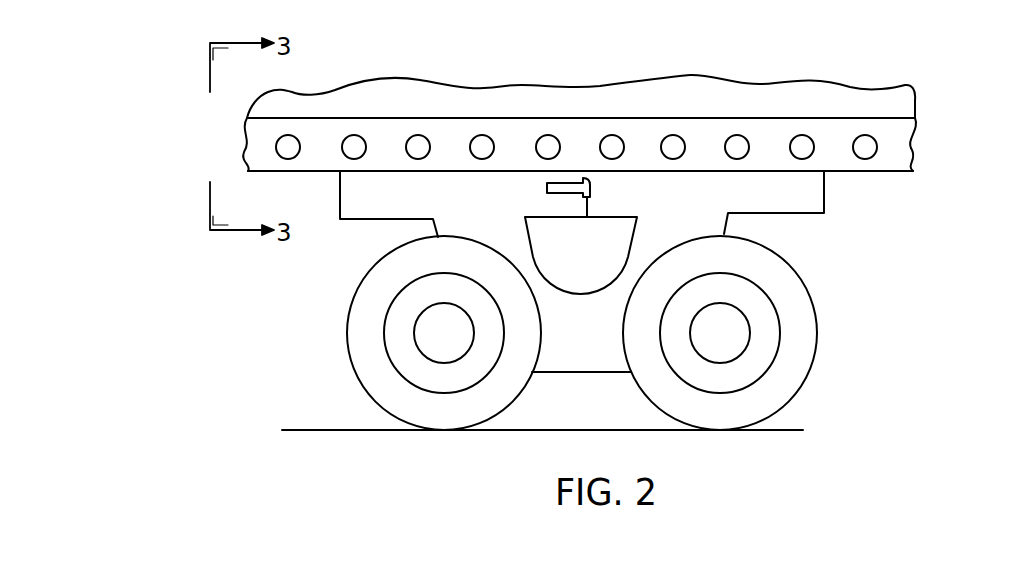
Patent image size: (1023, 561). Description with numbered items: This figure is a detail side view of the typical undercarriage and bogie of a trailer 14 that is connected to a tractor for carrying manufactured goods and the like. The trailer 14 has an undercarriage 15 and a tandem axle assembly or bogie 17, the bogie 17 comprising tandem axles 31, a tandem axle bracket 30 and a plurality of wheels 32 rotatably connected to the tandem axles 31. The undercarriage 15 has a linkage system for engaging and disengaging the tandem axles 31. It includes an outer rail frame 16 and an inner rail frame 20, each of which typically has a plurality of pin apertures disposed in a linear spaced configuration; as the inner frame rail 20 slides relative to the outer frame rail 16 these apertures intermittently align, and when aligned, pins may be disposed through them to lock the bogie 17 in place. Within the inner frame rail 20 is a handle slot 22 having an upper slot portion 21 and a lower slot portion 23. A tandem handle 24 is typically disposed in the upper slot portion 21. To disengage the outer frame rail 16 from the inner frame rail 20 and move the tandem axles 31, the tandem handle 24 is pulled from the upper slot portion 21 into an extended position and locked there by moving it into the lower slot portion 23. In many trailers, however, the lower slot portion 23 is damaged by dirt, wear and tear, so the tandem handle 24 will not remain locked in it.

The trailer 14 is at (893, 100).
The undercarriage 15 is at (233, 149).
The outer rail frame 16 is at (747, 137).
The bogie 17 is at (893, 221).
The inner rail frame 20 is at (357, 197).
The upper slot portion 21 is at (575, 147).
The handle slot 22 is at (603, 181).
The lower slot portion 23 is at (587, 217).
The tandem handle 24 is at (547, 186).
The tandem axle bracket 30 is at (452, 224).
The tandem axles 31 is at (443, 355).
The wheels 32 is at (357, 352).